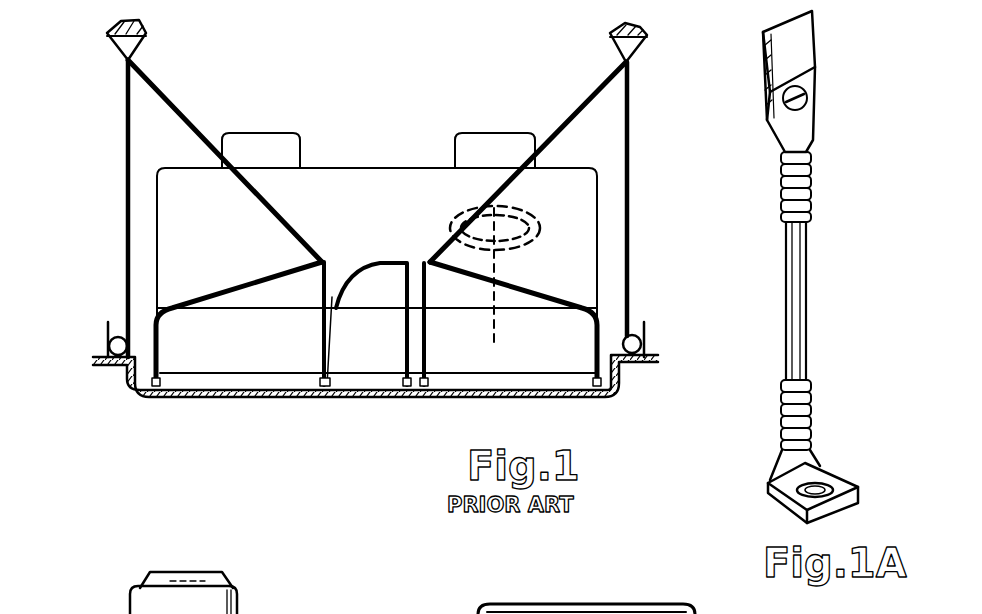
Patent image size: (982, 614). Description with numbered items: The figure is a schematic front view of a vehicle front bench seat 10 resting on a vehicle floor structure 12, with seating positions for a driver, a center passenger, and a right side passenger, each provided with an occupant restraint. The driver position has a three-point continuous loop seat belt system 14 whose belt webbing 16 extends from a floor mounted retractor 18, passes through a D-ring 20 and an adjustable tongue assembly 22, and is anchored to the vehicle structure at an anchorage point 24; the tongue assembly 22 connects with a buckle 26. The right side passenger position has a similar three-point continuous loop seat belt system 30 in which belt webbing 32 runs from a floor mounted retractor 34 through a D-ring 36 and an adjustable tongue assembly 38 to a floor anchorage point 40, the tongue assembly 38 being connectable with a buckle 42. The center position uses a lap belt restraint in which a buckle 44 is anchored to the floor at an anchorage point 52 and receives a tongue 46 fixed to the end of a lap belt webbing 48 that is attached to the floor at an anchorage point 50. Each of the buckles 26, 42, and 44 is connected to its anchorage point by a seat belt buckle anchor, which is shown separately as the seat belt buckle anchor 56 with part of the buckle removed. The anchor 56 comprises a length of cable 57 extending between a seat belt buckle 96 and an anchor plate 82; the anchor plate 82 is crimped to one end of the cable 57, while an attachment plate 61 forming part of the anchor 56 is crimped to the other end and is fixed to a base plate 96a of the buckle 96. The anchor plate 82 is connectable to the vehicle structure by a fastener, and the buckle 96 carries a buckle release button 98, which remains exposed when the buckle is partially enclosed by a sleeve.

In FIG. 1, the vehicle front bench seat 10 is at (350, 185).
In FIG. 1, the vehicle floor structure 12 is at (258, 401).
In FIG. 1, the three-point continuous loop seat belt system 14 is at (663, 80).
In FIG. 1, the belt webbing 16 is at (630, 183).
In FIG. 1, the floor mounted retractor 18 is at (648, 343).
In FIG. 1, the D-ring 20 is at (612, 40).
In FIG. 1, the adjustable tongue assembly 22 is at (431, 262).
In FIG. 1, the anchorage point 24 is at (598, 396).
In FIG. 1, the buckle 26 is at (437, 297).
In FIG. 1, the three-point continuous loop seat belt system 30 is at (90, 148).
In FIG. 1, the belt webbing 32 is at (127, 240).
In FIG. 1, the floor mounted retractor 34 is at (108, 343).
In FIG. 1, the D-ring 36 is at (118, 47).
In FIG. 1, the adjustable tongue assembly 38 is at (318, 262).
In FIG. 1, the floor anchorage point 40 is at (148, 396).
In FIG. 1, the buckle 42 is at (317, 297).
In FIG. 1, the buckle 44 is at (402, 297).
In FIG. 1, the tongue 46 is at (406, 265).
In FIG. 1, the lap belt webbing 48 is at (365, 270).
In FIG. 1, the anchorage point 50 is at (322, 398).
In FIG. 1, the anchorage point 52 is at (418, 398).
In FIG. 1A, the seat belt buckle anchor 56 is at (752, 346).
In FIG. 1A, the cable 57 is at (795, 320).
In FIG. 1A, the attachment plate 61 is at (797, 133).
In FIG. 1A, the anchor plate 82 is at (793, 482).
In FIG. 1A, the seat belt buckle 96 is at (245, 613).
In FIG. 1A, the base plate 96a is at (812, 37).
In FIG. 1A, the buckle release button 98 is at (155, 573).